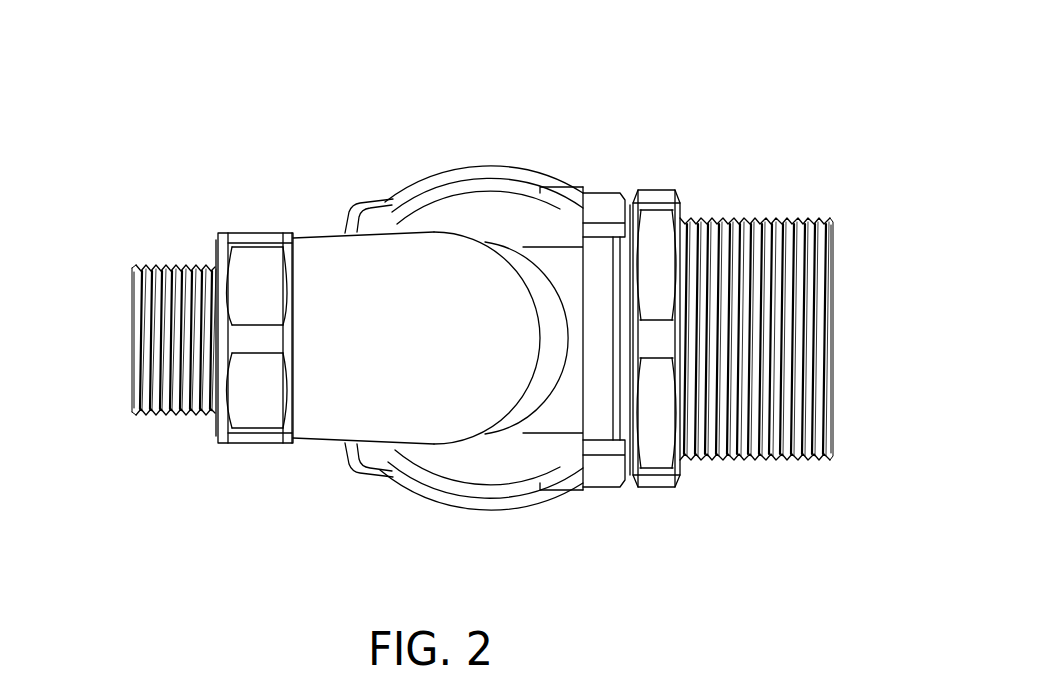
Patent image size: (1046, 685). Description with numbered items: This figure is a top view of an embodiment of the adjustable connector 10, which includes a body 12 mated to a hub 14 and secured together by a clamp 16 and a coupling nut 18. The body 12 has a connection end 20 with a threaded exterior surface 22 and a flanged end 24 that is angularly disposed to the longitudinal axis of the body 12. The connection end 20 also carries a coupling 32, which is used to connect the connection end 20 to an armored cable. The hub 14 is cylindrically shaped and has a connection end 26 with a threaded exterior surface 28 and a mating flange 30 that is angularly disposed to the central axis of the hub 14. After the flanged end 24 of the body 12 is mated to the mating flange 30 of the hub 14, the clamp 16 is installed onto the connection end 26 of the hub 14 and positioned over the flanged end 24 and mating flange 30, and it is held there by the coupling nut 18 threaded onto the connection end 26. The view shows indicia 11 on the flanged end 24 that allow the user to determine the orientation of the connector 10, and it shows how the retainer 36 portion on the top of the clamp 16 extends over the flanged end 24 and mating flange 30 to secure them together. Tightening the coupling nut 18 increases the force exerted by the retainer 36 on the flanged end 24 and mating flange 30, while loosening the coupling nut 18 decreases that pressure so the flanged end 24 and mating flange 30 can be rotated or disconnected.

The adjustable connector 10 is at (455, 106).
The indicia 11 is at (418, 200).
The body 12 is at (272, 492).
The hub 14 is at (634, 90).
The clamp 16 is at (596, 260).
The coupling nut 18 is at (660, 487).
The connection end 20 is at (130, 330).
The threaded exterior surface 22 is at (182, 265).
The flanged end 24 is at (470, 490).
The connection end 26 is at (834, 340).
The threaded exterior surface 28 is at (738, 215).
The mating flange 30 is at (512, 500).
The coupling 32 is at (258, 234).
The retainer 36 is at (613, 193).